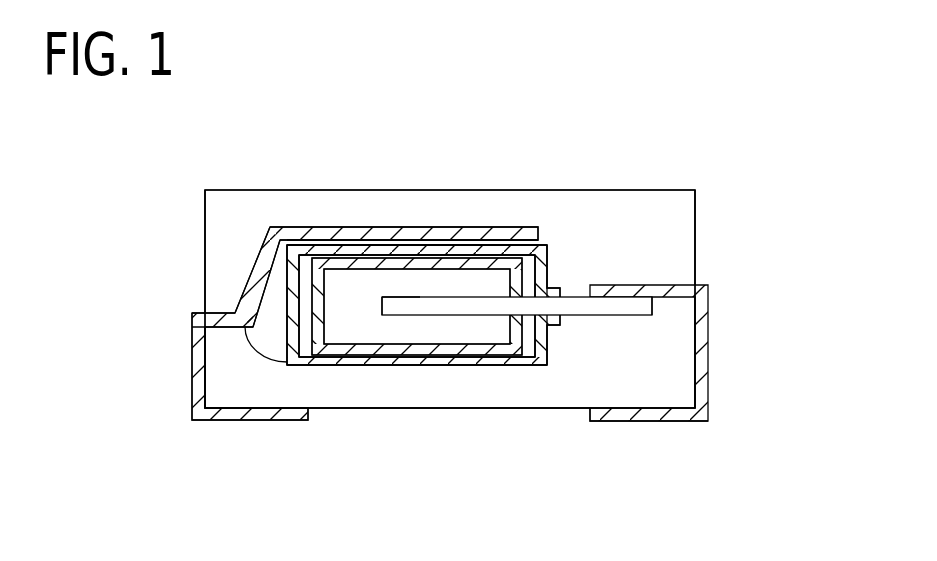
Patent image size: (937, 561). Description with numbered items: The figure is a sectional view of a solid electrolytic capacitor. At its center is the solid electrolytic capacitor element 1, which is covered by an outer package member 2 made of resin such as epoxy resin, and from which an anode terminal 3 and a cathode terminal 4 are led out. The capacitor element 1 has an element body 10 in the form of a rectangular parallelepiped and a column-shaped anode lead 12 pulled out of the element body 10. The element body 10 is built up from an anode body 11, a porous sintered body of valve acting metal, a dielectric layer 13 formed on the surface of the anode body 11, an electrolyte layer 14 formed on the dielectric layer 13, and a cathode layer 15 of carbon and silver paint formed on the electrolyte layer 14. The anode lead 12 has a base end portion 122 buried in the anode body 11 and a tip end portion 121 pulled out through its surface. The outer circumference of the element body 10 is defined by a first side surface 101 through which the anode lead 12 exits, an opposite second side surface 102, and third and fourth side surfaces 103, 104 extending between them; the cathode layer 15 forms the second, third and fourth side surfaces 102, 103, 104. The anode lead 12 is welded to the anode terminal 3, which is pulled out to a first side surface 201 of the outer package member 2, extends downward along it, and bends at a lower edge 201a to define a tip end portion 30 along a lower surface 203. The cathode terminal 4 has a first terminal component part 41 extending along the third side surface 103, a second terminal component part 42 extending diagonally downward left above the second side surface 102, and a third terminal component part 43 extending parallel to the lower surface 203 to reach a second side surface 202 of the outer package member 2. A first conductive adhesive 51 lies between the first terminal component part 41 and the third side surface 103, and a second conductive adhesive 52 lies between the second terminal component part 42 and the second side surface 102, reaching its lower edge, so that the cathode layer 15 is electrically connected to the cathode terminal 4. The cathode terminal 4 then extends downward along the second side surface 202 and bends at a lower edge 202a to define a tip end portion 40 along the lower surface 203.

The solid electrolytic capacitor element 1 is at (397, 493).
The outer package member 2 is at (235, 218).
The anode terminal 3 is at (684, 392).
The cathode terminal 4 is at (326, 310).
The element body 10 is at (441, 310).
The anode body 11 is at (342, 457).
The anode lead 12 is at (524, 310).
The dielectric layer 13 is at (452, 354).
The electrolyte layer 14 is at (418, 356).
The cathode layer 15 is at (441, 310).
The tip end portion of the anode terminal 30 is at (620, 413).
The tip end portion of the cathode terminal 40 is at (233, 413).
The first terminal component part 41 is at (445, 233).
The second terminal component part 42 is at (256, 279).
The third terminal component part 43 is at (219, 310).
The first conductive adhesive 51 is at (500, 247).
The second conductive adhesive 52 is at (253, 334).
The first side surface 101 is at (553, 254).
The second side surface 102 is at (282, 335).
The third side surface 103 is at (345, 238).
The fourth side surface 104 is at (328, 372).
The tip end portion 121 is at (620, 326).
The base end portion 122 is at (409, 288).
The first side surface 201 is at (705, 235).
The lower edge 201a is at (697, 428).
The second side surface 202 is at (197, 216).
The lower edge 202a is at (194, 412).
The lower surface 203 is at (556, 418).